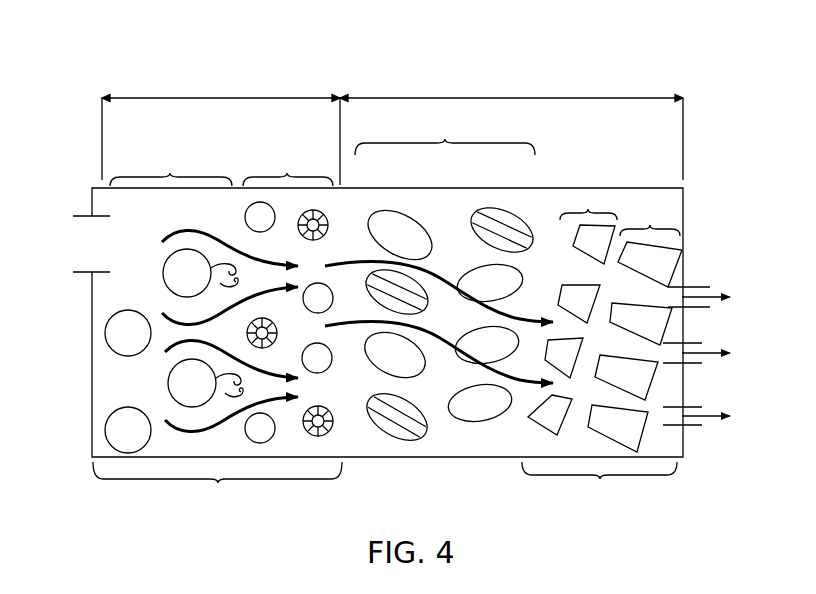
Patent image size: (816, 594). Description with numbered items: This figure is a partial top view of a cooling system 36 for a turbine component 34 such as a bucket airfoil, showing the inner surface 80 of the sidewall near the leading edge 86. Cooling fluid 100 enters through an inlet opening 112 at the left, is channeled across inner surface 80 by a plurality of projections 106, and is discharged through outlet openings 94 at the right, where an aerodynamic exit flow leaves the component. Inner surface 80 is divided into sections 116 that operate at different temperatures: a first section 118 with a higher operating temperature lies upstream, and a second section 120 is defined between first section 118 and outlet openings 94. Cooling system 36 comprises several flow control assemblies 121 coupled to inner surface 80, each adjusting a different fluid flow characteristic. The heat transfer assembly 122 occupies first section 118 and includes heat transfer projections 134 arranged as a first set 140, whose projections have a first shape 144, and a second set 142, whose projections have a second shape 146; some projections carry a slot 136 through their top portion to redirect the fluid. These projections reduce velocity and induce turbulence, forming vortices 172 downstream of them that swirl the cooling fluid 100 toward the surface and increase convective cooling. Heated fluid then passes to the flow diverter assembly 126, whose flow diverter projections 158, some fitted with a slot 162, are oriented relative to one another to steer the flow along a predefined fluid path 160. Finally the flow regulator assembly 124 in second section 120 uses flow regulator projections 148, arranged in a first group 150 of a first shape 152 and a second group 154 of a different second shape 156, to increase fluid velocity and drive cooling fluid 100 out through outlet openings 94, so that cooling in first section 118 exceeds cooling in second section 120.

The component 34 is at (503, 38).
The cooling system 36 is at (567, 170).
The inner surface 80 is at (403, 200).
The leading edge 86 is at (686, 210).
The outlet opening 94 is at (720, 342).
The cooling fluid 100 is at (200, 236).
The projection 106 is at (415, 230).
The inlet opening 112 is at (74, 236).
The section 116 is at (203, 98).
The first section 118 is at (268, 98).
The second section 120 is at (557, 98).
The flow control assembly 121 is at (385, 310).
The heat transfer assembly 122 is at (217, 482).
The flow regulator assembly 124 is at (599, 480).
The flow diverter assembly 126 is at (445, 136).
The heat transfer projection 134 is at (247, 346).
The slot 136 is at (333, 429).
The first set 140 is at (171, 169).
The second set 142 is at (288, 169).
The first shape 144 is at (163, 281).
The second shape 146 is at (270, 207).
The flow regulator projection 148 is at (655, 379).
The first group 150 is at (574, 283).
The first shape 152 is at (580, 244).
The second group 154 is at (635, 327).
The second shape 156 is at (652, 279).
The flow diverter projection 158 is at (456, 324).
The fluid path 160 is at (422, 263).
The slot 162 is at (424, 426).
The vortices 172 is at (245, 276).